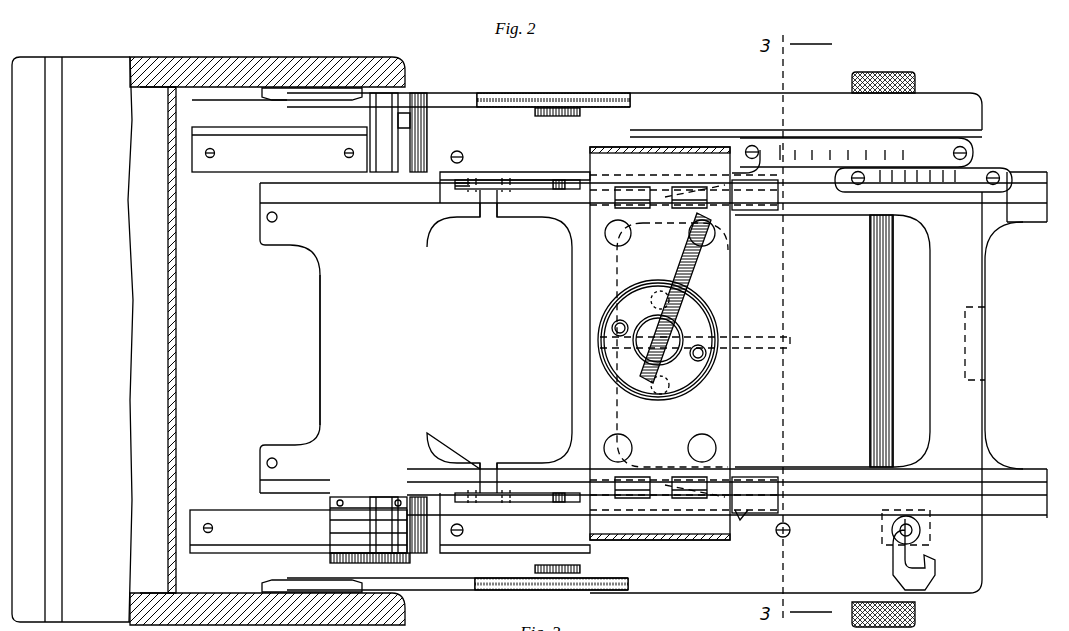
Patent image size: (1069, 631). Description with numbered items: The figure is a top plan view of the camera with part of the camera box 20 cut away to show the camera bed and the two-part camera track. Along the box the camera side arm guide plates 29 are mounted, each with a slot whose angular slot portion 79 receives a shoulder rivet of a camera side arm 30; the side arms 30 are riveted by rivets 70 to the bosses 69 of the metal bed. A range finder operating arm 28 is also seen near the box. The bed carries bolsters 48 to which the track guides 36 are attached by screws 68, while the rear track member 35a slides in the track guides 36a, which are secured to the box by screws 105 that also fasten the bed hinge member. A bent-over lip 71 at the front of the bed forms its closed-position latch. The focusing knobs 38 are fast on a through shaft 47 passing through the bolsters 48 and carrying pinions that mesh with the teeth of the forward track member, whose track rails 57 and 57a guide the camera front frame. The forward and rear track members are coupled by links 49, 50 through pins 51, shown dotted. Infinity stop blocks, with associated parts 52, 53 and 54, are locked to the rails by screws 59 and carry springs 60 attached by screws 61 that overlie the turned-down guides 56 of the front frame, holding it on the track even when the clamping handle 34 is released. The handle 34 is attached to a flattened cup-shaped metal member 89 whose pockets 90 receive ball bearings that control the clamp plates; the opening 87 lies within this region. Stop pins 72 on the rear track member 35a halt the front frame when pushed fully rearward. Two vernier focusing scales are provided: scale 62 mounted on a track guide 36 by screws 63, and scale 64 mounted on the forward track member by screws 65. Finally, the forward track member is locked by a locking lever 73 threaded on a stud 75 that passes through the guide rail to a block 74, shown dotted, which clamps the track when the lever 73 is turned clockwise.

The camera box 20 is at (98, 70).
The range finder operating arm 28 is at (335, 558).
The camera side arm guide plate 29 is at (262, 96).
The camera side arm 30 is at (450, 100).
The clamping handle or lever 34 is at (688, 270).
The rear track member 35a is at (322, 338).
The track guide 36 is at (975, 162).
The track guide 36a is at (246, 165).
The focusing knob 38 is at (883, 72).
The through shaft 47 is at (880, 294).
The camera bed bolster 48 is at (968, 118).
The link 49 is at (488, 192).
The link 50 is at (489, 490).
The pin 51 is at (472, 180).
The block 52 is at (364, 497).
The screw 53 is at (340, 500).
The pinion 54 is at (410, 560).
The guide 56 is at (631, 187).
The track rail 57 is at (1028, 222).
The frame 57a is at (384, 205).
The screw 59 is at (770, 188).
The spring 60 is at (703, 187).
The screw 61 is at (732, 170).
The focusing scale 62 is at (910, 148).
The screw 63 is at (756, 145).
The focusing scale 64 is at (970, 182).
The screw 65 is at (1000, 175).
The screw 68 is at (790, 531).
The boss 69 is at (588, 100).
The rivet 70 is at (540, 114).
The bent-over lip 71 is at (978, 357).
The stop pin 72 is at (278, 219).
The locking lever 73 is at (893, 575).
The block 74 is at (932, 530).
The threaded stud 75 is at (546, 181).
The angular slot portion 79 is at (332, 95).
The hole 87 is at (622, 235).
The metal member 89 is at (636, 395).
The recess or pocket 90 is at (612, 328).
The screw 105 is at (214, 152).